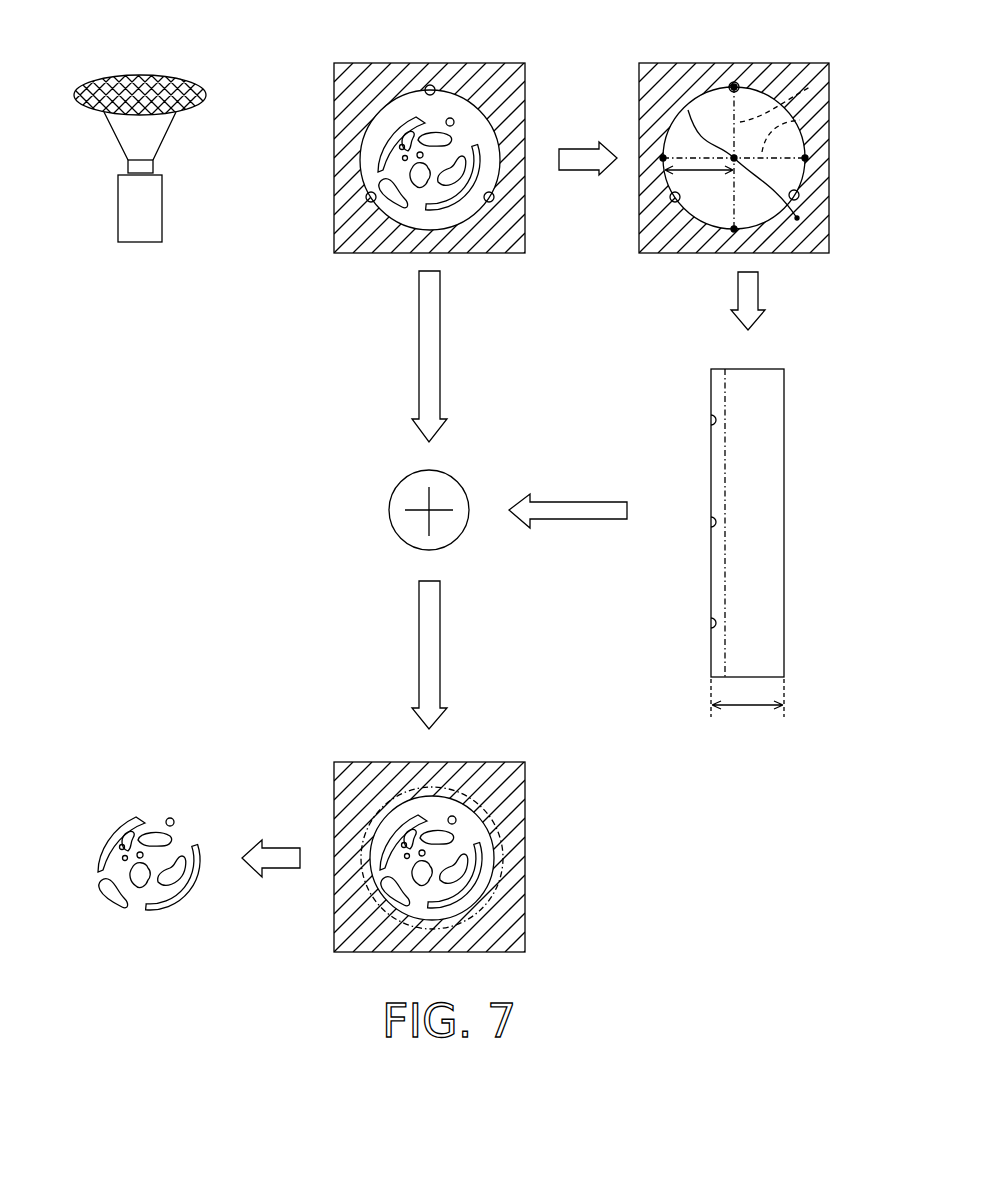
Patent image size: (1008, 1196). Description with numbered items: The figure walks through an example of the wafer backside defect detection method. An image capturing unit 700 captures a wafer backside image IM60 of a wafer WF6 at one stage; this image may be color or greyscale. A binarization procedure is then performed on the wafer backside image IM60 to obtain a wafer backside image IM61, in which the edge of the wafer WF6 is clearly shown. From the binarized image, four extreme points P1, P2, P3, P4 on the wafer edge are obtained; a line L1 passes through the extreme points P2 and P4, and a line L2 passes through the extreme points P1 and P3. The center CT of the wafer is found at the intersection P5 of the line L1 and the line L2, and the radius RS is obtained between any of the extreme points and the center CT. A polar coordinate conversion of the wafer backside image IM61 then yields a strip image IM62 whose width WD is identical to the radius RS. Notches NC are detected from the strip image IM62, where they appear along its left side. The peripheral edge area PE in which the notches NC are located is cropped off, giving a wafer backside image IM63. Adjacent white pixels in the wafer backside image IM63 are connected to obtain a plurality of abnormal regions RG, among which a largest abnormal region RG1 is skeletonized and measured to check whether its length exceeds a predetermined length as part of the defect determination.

The wafer WF6 is at (134, 78).
The image capturing unit 700 is at (138, 211).
The wafer backside image IM60 is at (488, 63).
The wafer backside image IM61 is at (785, 63).
The center CT is at (688, 110).
The extreme point P1 is at (734, 229).
The extreme point P2 is at (805, 158).
The extreme point P3 is at (734, 87).
The extreme point P4 is at (663, 159).
The intersection P5 is at (790, 214).
The line L1 is at (800, 120).
The line L2 is at (812, 86).
The radius RS is at (699, 184).
The strip image IM62 is at (785, 483).
The peripheral edge area PE is at (732, 387).
The notches NC is at (703, 411).
The width WD is at (747, 707).
The wafer backside image IM63 is at (482, 762).
The abnormal regions RG is at (127, 820).
The largest abnormal region RG1 is at (178, 897).